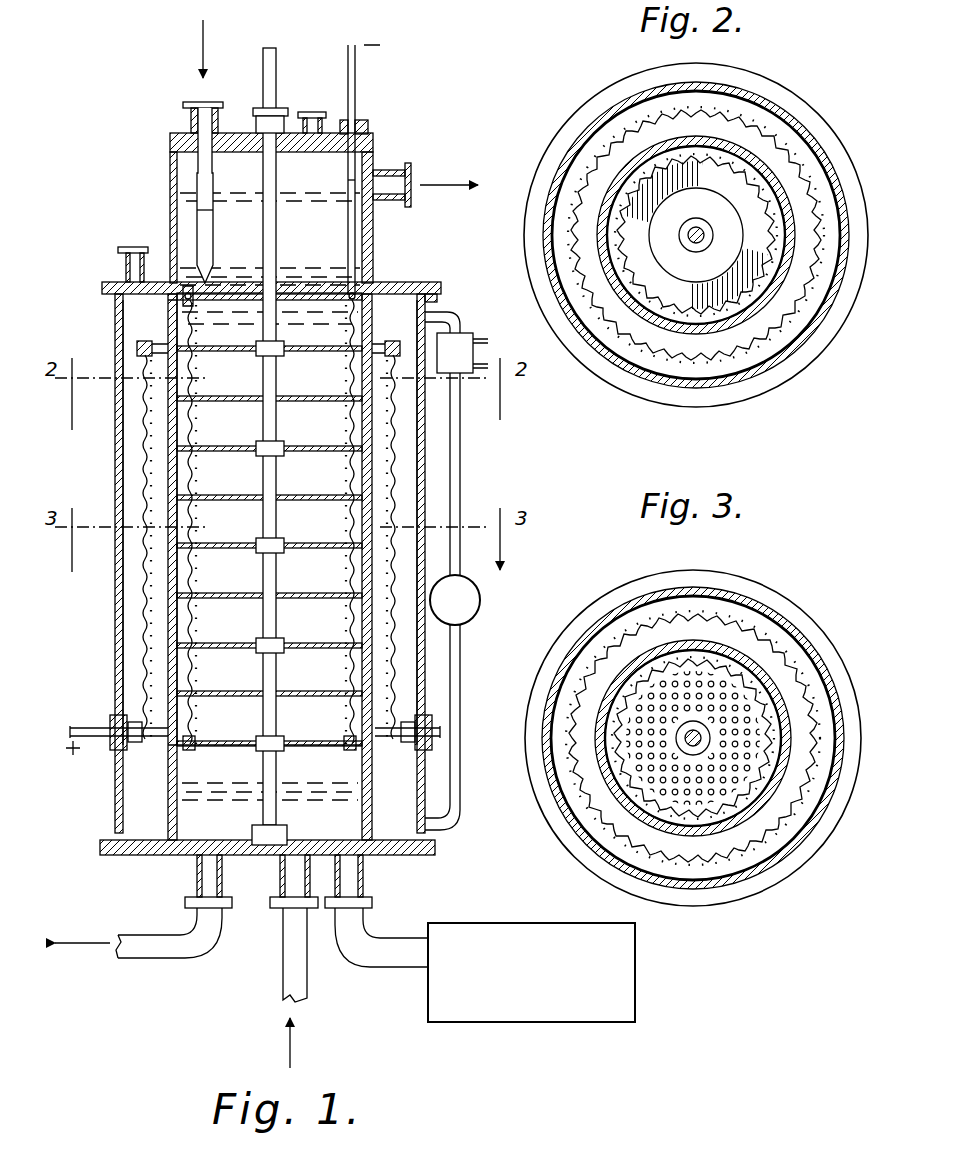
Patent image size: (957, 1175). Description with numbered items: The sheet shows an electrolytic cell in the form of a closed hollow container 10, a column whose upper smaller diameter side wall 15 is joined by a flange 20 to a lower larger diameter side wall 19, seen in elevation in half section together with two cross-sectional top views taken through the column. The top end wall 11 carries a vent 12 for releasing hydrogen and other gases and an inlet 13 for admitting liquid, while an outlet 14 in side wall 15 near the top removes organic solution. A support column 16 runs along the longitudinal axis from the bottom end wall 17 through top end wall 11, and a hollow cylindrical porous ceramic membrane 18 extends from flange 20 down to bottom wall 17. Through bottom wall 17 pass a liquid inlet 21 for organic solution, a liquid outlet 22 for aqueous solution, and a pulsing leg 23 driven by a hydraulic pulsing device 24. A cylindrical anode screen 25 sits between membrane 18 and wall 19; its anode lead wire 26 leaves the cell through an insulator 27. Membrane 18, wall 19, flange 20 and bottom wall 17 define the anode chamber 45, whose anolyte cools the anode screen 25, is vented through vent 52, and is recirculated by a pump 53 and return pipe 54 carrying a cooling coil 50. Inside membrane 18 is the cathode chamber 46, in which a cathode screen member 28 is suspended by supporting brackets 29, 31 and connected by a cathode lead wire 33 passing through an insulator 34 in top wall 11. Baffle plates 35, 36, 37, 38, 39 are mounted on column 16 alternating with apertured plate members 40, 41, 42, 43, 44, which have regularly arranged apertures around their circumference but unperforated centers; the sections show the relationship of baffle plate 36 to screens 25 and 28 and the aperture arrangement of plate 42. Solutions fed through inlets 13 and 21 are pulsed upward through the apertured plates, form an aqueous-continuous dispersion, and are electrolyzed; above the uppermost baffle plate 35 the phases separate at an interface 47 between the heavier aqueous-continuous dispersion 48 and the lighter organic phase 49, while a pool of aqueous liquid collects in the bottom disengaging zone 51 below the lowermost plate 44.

In FIG. 1, the closed hollow container 10 is at (455, 252).
In FIG. 2, the closed hollow container 10 is at (855, 100).
In FIG. 3, the closed hollow container 10 is at (855, 625).
In FIG. 1, the top end wall 11 is at (240, 133).
In FIG. 1, the vent 12 is at (312, 112).
In FIG. 1, the inlet 13 is at (198, 110).
In FIG. 1, the outlet 14 is at (400, 172).
In FIG. 1, the smaller diameter side wall 15 is at (178, 178).
In FIG. 1, the support column 16 is at (268, 60).
In FIG. 2, the support column 16 is at (698, 225).
In FIG. 3, the support column 16 is at (701, 714).
In FIG. 1, the bottom end wall 17 is at (245, 860).
In FIG. 1, the porous ceramic membrane 18 is at (370, 492).
In FIG. 2, the porous ceramic membrane 18 is at (784, 270).
In FIG. 3, the porous ceramic membrane 18 is at (722, 645).
In FIG. 1, the larger diameter side wall 19 is at (422, 456).
In FIG. 2, the larger diameter side wall 19 is at (605, 118).
In FIG. 3, the larger diameter side wall 19 is at (792, 600).
In FIG. 1, the flange 20 is at (430, 283).
In FIG. 1, the liquid inlet 21 is at (292, 905).
In FIG. 1, the liquid outlet 22 is at (205, 878).
In FIG. 1, the pulsing leg 23 is at (350, 870).
In FIG. 1, the hydraulic pulsing device 24 is at (480, 1022).
In FIG. 1, the cylindrical anode screen 25 is at (398, 683).
In FIG. 2, the cylindrical anode screen 25 is at (812, 310).
In FIG. 3, the cylindrical anode screen 25 is at (648, 615).
In FIG. 1, the anode lead wire 26 is at (78, 730).
In FIG. 1, the insulator 27 is at (105, 718).
In FIG. 1, the cathode screen member 28 is at (168, 468).
In FIG. 2, the cathode screen member 28 is at (764, 188).
In FIG. 3, the cathode screen member 28 is at (766, 785).
In FIG. 1, the supporting bracket 29 is at (185, 285).
In FIG. 1, the supporting bracket 31 is at (168, 762).
In FIG. 1, the cathode lead wire 33 is at (358, 80).
In FIG. 1, the insulator 34 is at (368, 130).
In FIG. 1, the baffle plate 35 is at (298, 322).
In FIG. 1, the baffle plate 36 is at (296, 410).
In FIG. 2, the baffle plate 36 is at (638, 307).
In FIG. 1, the baffle plate 37 is at (296, 510).
In FIG. 1, the baffle plate 38 is at (298, 612).
In FIG. 1, the baffle plate 39 is at (298, 708).
In FIG. 1, the apertured plate member 40 is at (296, 372).
In FIG. 1, the apertured plate member 41 is at (296, 462).
In FIG. 1, the apertured plate member 42 is at (296, 560).
In FIG. 3, the apertured plate member 42 is at (718, 808).
In FIG. 1, the apertured plate member 43 is at (298, 660).
In FIG. 1, the apertured plate member 44 is at (298, 758).
In FIG. 1, the anode chamber 45 is at (158, 582).
In FIG. 2, the anode chamber 45 is at (800, 350).
In FIG. 3, the anode chamber 45 is at (805, 815).
In FIG. 1, the cathode chamber 46 is at (210, 620).
In FIG. 2, the cathode chamber 46 is at (694, 272).
In FIG. 1, the interface 47 is at (345, 262).
In FIG. 1, the aqueous-continuous dispersion 48 is at (305, 292).
In FIG. 1, the organic phase 49 is at (200, 210).
In FIG. 1, the cooling coil 50 is at (468, 334).
In FIG. 1, the bottom disengaging zone 51 is at (180, 855).
In FIG. 1, the vent 52 is at (130, 262).
In FIG. 1, the pump 53 is at (482, 597).
In FIG. 1, the return pipe 54 is at (460, 428).